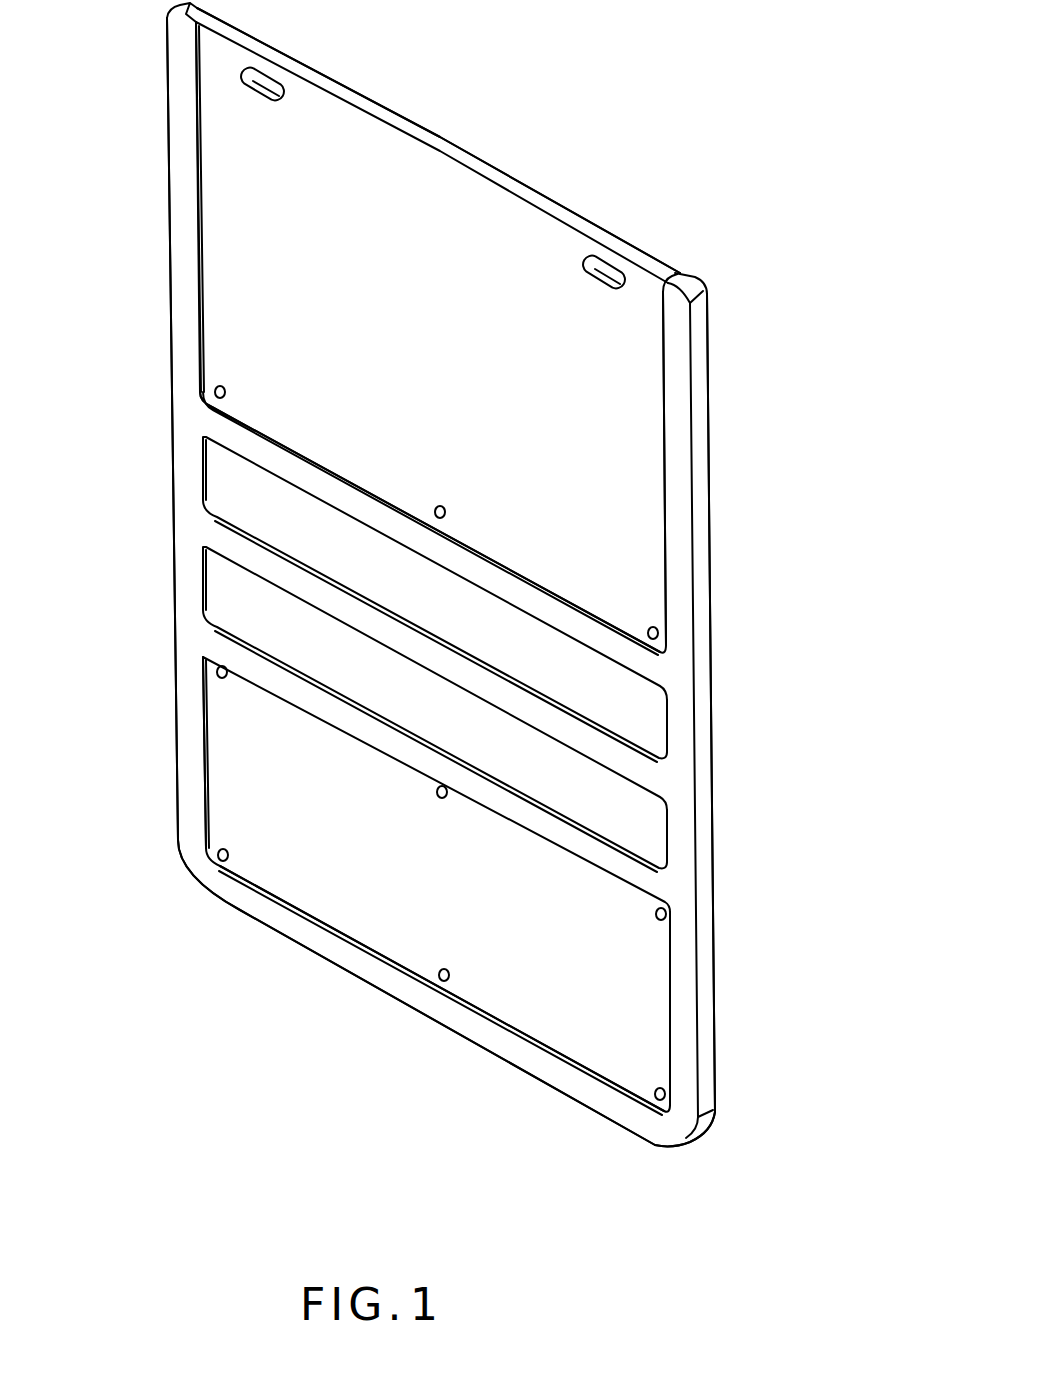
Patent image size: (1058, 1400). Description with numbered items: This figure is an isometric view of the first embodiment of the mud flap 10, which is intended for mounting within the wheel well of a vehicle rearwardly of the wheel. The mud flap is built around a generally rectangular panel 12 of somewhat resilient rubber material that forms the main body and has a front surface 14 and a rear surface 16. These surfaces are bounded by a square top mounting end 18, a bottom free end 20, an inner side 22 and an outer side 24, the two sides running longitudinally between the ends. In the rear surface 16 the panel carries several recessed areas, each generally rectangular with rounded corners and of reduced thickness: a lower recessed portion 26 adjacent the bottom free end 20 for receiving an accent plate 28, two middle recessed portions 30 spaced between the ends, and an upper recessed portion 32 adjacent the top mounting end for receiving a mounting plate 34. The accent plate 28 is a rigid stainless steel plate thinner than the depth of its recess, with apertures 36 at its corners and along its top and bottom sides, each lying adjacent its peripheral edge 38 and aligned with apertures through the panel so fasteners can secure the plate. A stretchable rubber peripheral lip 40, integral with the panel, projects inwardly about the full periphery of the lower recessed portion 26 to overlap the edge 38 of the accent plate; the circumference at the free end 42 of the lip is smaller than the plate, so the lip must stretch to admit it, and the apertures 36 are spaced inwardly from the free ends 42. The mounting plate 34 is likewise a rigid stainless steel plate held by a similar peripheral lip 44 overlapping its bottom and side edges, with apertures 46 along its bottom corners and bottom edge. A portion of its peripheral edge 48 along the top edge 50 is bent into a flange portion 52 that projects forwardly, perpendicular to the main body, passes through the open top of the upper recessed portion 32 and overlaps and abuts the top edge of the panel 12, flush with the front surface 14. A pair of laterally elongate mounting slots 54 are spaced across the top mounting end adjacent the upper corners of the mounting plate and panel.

The mud flap 10 is at (837, 556).
The panel 12 is at (683, 728).
The front surface 14 is at (710, 649).
The rear surface 16 is at (243, 548).
The top mounting end 18 is at (695, 280).
The bottom free end 20 is at (655, 1147).
The inner side 22 is at (705, 848).
The outer side 24 is at (183, 702).
The lower recessed portion 26 is at (321, 875).
The accent plate 28 is at (616, 985).
The middle recessed portions 30 is at (638, 828).
The upper recessed portion 32 is at (617, 414).
The mounting plate 34 is at (639, 473).
The apertures 36 is at (226, 680).
The peripheral edge 38 is at (386, 947).
The peripheral lip 40 is at (195, 812).
The free end 42 is at (203, 778).
The peripheral lip 44 is at (200, 195).
The apertures 46 is at (228, 388).
The peripheral edge 48 is at (333, 458).
The top edge 50 is at (430, 153).
The flange portion 52 is at (490, 158).
The mounting slots 54 is at (272, 99).